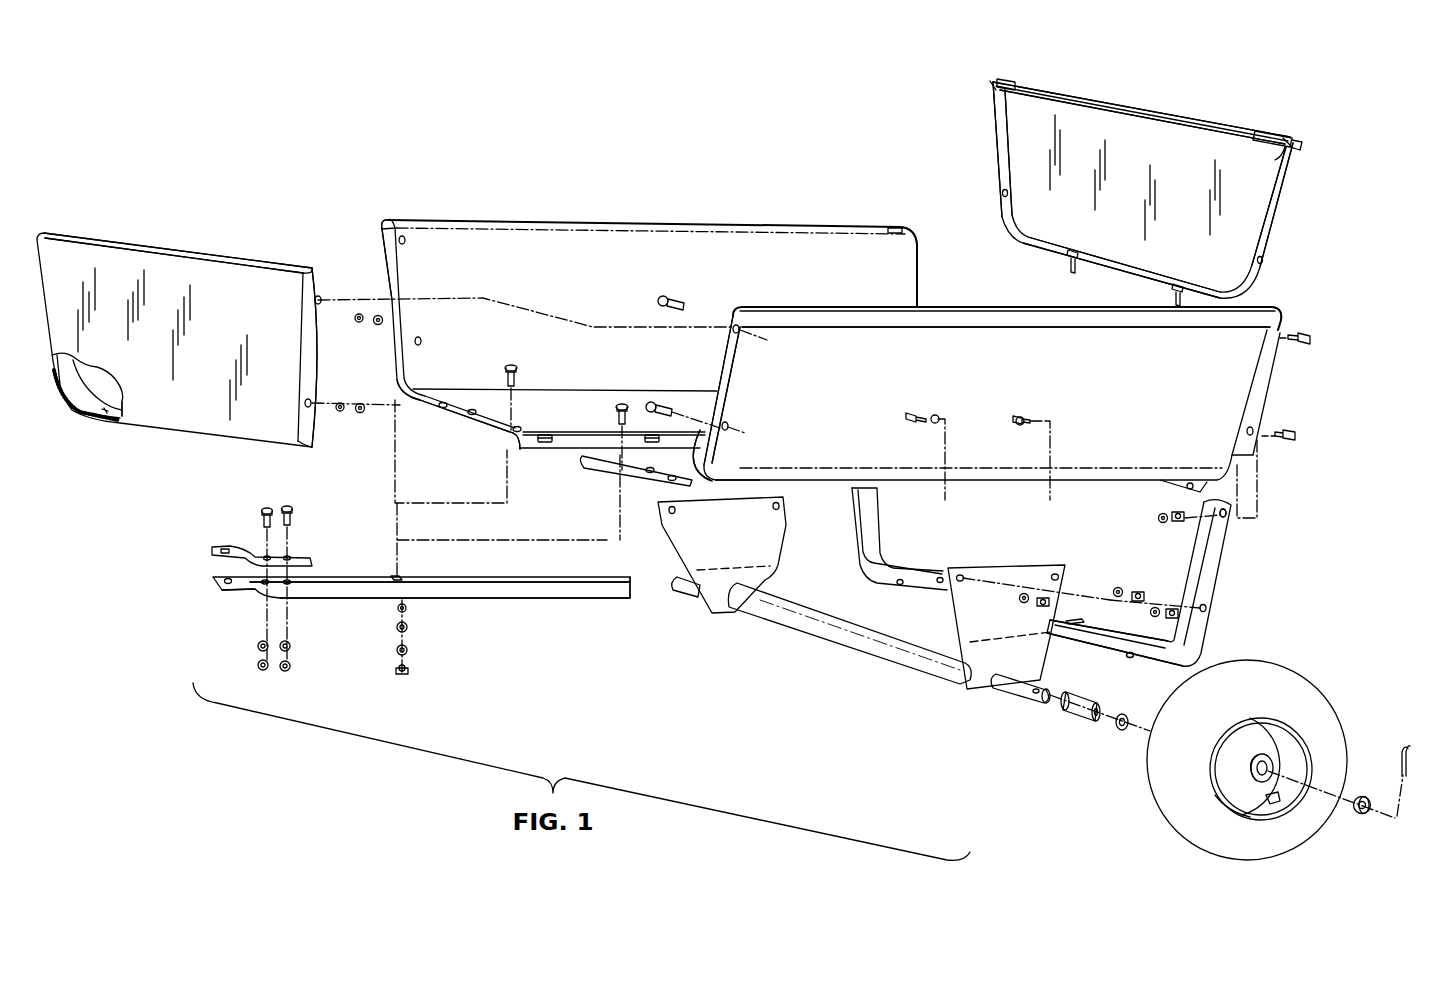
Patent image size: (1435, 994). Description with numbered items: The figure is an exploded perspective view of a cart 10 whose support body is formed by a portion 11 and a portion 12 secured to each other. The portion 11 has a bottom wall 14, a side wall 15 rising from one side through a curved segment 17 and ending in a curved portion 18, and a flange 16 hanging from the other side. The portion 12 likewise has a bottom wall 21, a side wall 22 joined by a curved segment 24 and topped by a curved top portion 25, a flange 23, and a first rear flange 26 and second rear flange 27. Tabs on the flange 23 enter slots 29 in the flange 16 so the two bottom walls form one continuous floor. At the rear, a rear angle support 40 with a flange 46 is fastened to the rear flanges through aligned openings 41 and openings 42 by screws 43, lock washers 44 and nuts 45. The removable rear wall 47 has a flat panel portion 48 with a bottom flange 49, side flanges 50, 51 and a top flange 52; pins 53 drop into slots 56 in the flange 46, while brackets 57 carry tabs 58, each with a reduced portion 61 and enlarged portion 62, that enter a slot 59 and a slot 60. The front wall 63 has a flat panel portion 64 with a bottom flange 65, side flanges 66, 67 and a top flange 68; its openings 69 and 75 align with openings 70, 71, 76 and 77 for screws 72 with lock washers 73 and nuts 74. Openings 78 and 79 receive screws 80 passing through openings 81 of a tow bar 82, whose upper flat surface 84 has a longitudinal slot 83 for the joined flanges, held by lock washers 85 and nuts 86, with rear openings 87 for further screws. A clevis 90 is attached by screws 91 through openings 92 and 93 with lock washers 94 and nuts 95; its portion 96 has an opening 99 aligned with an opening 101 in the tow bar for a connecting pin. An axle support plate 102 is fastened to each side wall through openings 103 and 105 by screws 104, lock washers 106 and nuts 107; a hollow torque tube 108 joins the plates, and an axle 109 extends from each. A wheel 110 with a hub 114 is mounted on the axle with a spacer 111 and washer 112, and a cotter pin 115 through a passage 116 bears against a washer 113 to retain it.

The cart 10 is at (733, 171).
The portion 11 is at (700, 227).
The portion 12 is at (999, 297).
The bottom wall 14 is at (500, 425).
The side wall 15 is at (388, 264).
The flange 16 is at (521, 455).
The curved segment 17 is at (410, 400).
The curved portion 18 is at (388, 218).
The bottom wall 21 is at (704, 470).
The side wall 22 is at (722, 355).
The flange 23 is at (590, 472).
The curved segment 24 is at (718, 474).
The curved top portion 25 is at (840, 325).
The first rear flange 26 is at (1272, 388).
The second rear flange 27 is at (1163, 478).
The slot 29 is at (546, 435).
The rear angle support 40 is at (1222, 630).
The circular shaped openings 41 is at (1250, 427).
The circular shaped openings 42 is at (1227, 530).
The screws 43 is at (1285, 440).
The lock washers 44 is at (1180, 524).
The nuts 45 is at (1160, 524).
The flange 46 is at (1112, 635).
The rear wall 47 is at (1276, 264).
The flat panel portion 48 is at (1127, 190).
The bottom flange 49 is at (1106, 276).
The side flange 50 is at (998, 178).
The side flange 51 is at (1272, 231).
The top flange 52 is at (1218, 128).
The pins 53 is at (1068, 266).
The slots 56 is at (1072, 620).
The bracket 57 is at (1010, 78).
The tab 58 is at (988, 84).
The slot 59 is at (899, 227).
The slot 60 is at (1275, 310).
The reduced portion 61 is at (1282, 149).
The enlarged portion 62 is at (1284, 160).
The front wall 63 is at (259, 460).
The flat panel portion 64 is at (212, 350).
The bottom flange 65 is at (118, 400).
The side flange 66 is at (78, 380).
The side flange 67 is at (318, 370).
The top flange 68 is at (292, 262).
The circular shaped openings 69 is at (304, 404).
The circular shaped openings 70 is at (422, 339).
The circular shaped openings 71 is at (729, 423).
The screws 72 is at (674, 299).
The lock washers 73 is at (358, 323).
The nuts 74 is at (378, 325).
The circular shaped openings 75 is at (92, 418).
The circular shaped openings 76 is at (448, 403).
The circular shaped openings 77 is at (652, 474).
The circular shaped opening 78 is at (521, 428).
The circular shaped opening 79 is at (618, 470).
The screws 80 is at (518, 372).
The circular shaped openings 81 is at (393, 569).
The tow bar 82 is at (540, 612).
The longitudinal slot 83 is at (560, 574).
The upper flat surface 84 is at (368, 590).
The lock washer 85 is at (408, 650).
The nut 86 is at (410, 671).
The circular shaped openings 87 is at (628, 597).
The clevis 90 is at (235, 540).
The screws 91 is at (292, 508).
The circular shaped openings 92 is at (292, 556).
The circular shaped openings 93 is at (290, 586).
The lock washers 94 is at (291, 646).
The nuts 95 is at (291, 666).
The portion 96 is at (212, 549).
The circular shaped opening 99 is at (223, 546).
The circular shaped opening 101 is at (230, 585).
The axle support plate 102 is at (780, 552).
The circular shaped openings 103 is at (942, 418).
The screws 104 is at (908, 411).
The circular shaped openings 105 is at (963, 566).
The lock washers 106 is at (1020, 603).
The nuts 107 is at (1043, 609).
The torque tube 108 is at (858, 660).
The axle 109 is at (695, 600).
The wheel 110 is at (1248, 860).
The spacer 111 is at (1093, 722).
The washer 112 is at (1122, 731).
The washer 113 is at (1364, 814).
The hub 114 is at (1244, 818).
The cotter pin 115 is at (1400, 766).
The passage 116 is at (1048, 690).